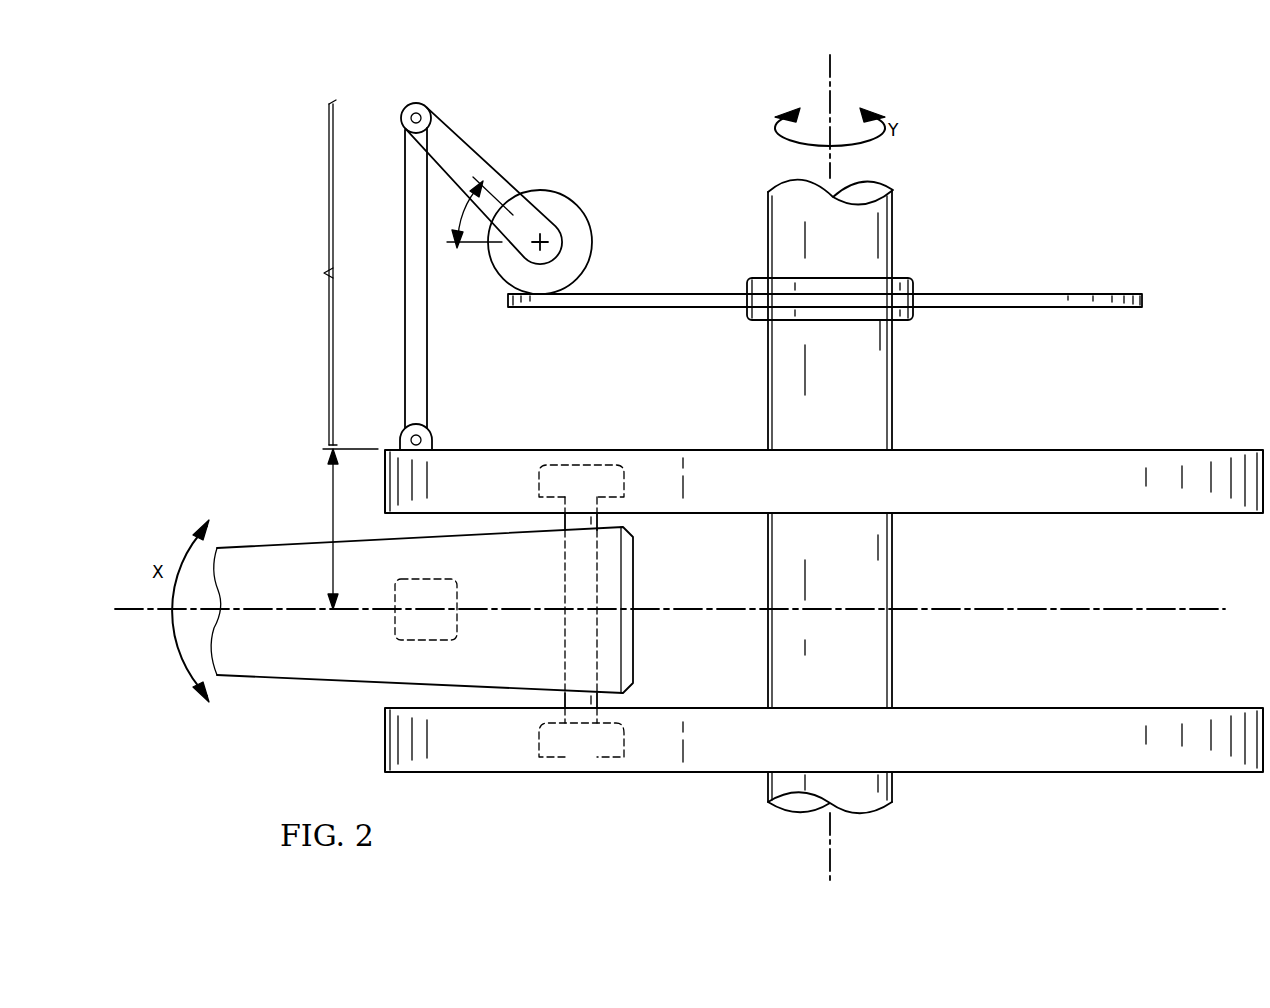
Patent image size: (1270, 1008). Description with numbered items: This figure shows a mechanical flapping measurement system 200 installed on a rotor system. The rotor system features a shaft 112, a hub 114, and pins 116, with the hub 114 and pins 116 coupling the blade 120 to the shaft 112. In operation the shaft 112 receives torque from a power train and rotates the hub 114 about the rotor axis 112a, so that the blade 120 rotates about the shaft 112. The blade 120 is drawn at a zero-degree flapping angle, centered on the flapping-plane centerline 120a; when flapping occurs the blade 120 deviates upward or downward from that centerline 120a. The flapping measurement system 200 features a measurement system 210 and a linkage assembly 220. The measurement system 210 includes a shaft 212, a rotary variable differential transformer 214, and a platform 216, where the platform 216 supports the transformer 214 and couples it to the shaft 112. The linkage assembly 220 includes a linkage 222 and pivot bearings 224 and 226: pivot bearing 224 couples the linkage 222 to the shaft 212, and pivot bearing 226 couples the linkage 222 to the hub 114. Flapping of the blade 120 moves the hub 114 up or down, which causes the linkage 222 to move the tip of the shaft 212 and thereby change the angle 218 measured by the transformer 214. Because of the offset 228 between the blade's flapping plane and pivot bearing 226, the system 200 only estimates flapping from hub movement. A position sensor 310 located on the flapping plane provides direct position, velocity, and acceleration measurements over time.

The mechanical flapping measurement system 200 is at (1108, 124).
The shaft 112 is at (893, 226).
The rotor axis 112a is at (832, 66).
The hub 114 is at (1105, 449).
The pin 116 is at (586, 462).
The blade 120 is at (267, 676).
The flapping-plane centerline 120a is at (135, 611).
The measurement system 210 is at (603, 166).
The shaft 212 is at (510, 181).
The rotary variable differential transformer (RVDT) 214 is at (594, 243).
The platform 216 is at (1101, 294).
The angle 218 is at (452, 182).
The linkage assembly 220 is at (307, 272).
The linkage 222 is at (428, 345).
The pivot bearing 224 is at (414, 100).
The pivot bearing 226 is at (433, 438).
The offset 228 is at (330, 500).
The position sensor 310 is at (440, 578).